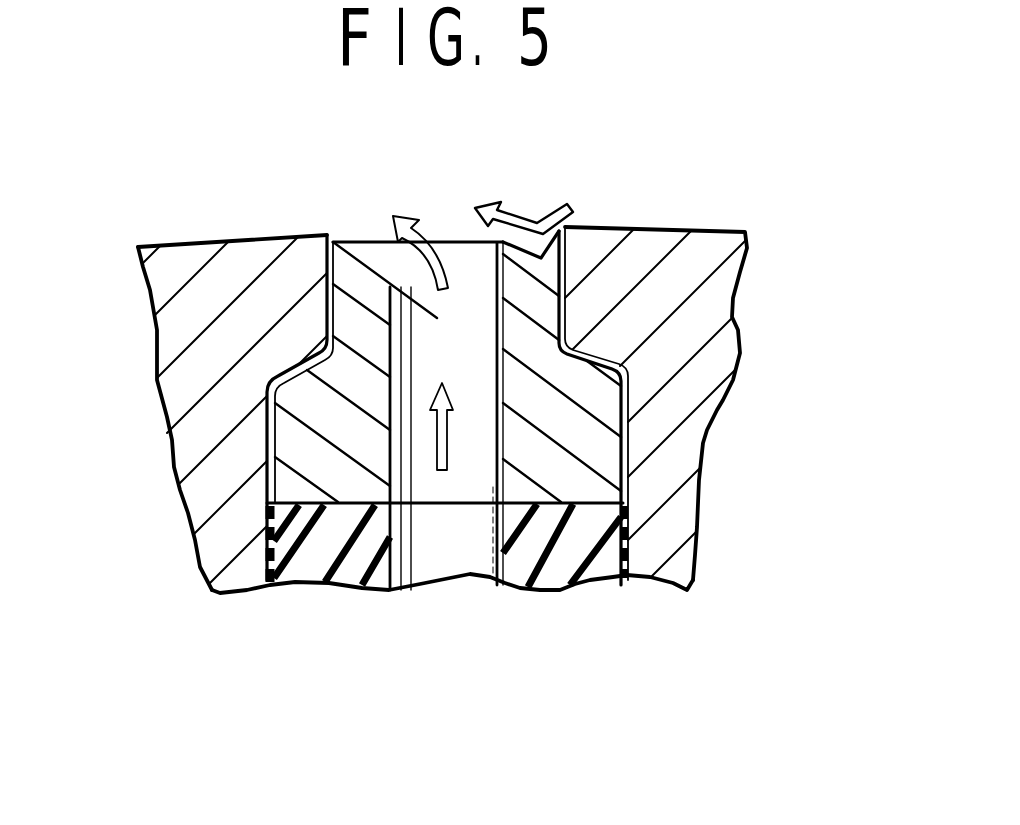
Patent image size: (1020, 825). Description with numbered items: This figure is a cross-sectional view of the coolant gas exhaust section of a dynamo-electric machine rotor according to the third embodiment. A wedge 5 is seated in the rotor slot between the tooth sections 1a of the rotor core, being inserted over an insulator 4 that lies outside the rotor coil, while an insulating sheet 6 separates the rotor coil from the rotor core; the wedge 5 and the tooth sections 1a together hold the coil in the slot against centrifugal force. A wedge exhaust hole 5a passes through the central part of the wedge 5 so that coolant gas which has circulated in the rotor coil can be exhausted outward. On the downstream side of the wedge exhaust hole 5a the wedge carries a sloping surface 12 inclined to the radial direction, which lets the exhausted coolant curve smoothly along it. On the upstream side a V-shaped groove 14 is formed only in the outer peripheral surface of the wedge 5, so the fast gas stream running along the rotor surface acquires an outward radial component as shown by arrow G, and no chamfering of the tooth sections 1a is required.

The tooth section 1a is at (647, 263).
The wedge 5 is at (580, 442).
The wedge exhaust hole 5a is at (412, 476).
The sloping surface 12 is at (371, 257).
The V-shaped groove 14 is at (541, 257).
The arrow G is at (528, 232).
The insulator 4 is at (580, 537).
The insulating sheet 6 is at (258, 558).